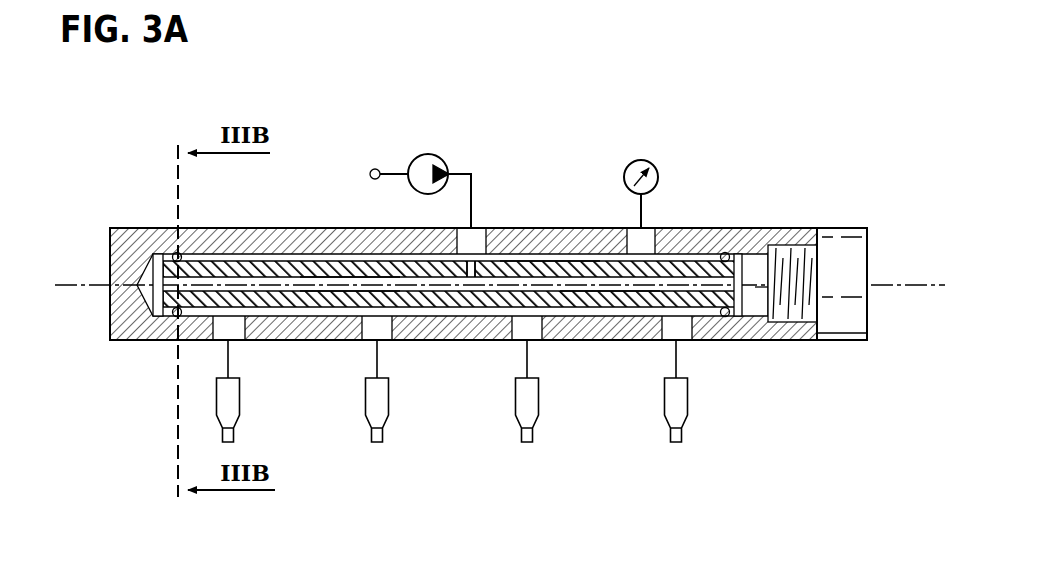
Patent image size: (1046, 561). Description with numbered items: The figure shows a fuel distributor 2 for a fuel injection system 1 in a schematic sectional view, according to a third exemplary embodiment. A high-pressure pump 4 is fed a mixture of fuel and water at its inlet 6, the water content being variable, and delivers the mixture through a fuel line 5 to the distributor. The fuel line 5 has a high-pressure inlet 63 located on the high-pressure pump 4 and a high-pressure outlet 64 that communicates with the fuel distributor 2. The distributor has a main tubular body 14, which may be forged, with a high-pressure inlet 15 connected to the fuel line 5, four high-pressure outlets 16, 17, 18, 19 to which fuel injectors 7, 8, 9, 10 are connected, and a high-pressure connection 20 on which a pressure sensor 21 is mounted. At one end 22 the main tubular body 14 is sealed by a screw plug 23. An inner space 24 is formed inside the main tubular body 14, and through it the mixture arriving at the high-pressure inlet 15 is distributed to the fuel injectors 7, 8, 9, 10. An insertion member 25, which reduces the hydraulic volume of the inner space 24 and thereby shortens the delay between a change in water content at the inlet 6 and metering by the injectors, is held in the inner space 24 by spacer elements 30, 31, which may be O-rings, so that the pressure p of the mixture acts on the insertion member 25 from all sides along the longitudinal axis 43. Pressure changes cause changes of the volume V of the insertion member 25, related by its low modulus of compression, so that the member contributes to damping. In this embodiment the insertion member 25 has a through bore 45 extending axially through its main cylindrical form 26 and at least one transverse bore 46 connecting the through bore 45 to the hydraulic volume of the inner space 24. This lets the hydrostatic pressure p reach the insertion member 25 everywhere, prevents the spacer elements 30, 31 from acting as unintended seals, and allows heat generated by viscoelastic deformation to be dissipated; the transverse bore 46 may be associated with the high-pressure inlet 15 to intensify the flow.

The fuel injection system 1 is at (135, 130).
The fuel distributor 2 is at (810, 192).
The high-pressure pump 4 is at (424, 164).
The fuel line 5 is at (474, 200).
The inlet 6 is at (375, 168).
The fuel injector 7 is at (232, 396).
The fuel injector 8 is at (380, 396).
The fuel injector 9 is at (530, 396).
The fuel injector 10 is at (680, 396).
The main tubular body 14 is at (273, 243).
The high-pressure inlet 15 is at (485, 228).
The high-pressure outlet 16 is at (240, 342).
The high-pressure outlet 17 is at (385, 342).
The high-pressure outlet 18 is at (535, 342).
The high-pressure outlet 19 is at (685, 342).
The high-pressure connection 20 is at (652, 228).
The pressure sensor 21 is at (637, 162).
The end 22 is at (800, 328).
The screw plug 23 is at (845, 262).
The inner space 24 is at (735, 318).
The insertion member 25 is at (216, 261).
The main cylindrical form 26 is at (562, 261).
The spacer element 30 is at (176, 314).
The spacer element 31 is at (746, 300).
The longitudinal axis 43 is at (65, 282).
The through bore 45 is at (346, 287).
The transverse bore 46 is at (470, 272).
The high-pressure inlet 63 is at (444, 160).
The high-pressure outlet 64 is at (472, 226).
The volume V is at (608, 300).
The pressure p is at (768, 287).